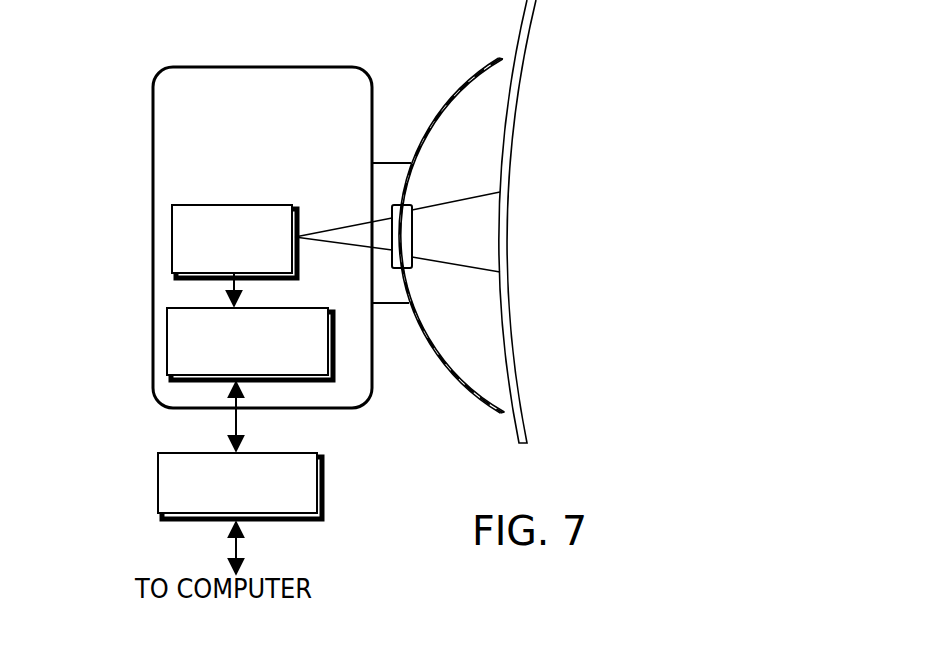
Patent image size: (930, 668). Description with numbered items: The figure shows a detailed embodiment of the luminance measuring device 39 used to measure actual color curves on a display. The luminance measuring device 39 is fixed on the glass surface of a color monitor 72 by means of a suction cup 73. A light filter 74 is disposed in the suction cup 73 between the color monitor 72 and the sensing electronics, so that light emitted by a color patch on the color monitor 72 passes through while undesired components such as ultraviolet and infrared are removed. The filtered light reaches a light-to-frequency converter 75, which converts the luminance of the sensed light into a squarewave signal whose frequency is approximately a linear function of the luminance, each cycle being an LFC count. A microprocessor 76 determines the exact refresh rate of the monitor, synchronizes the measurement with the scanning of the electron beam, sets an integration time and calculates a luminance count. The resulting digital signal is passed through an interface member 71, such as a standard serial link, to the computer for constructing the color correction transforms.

The luminance measuring device 39 is at (129, 60).
The interface member 71 is at (325, 478).
The color monitor 72 is at (527, 33).
The suction cup 73 is at (474, 60).
The light filter 74 is at (392, 210).
The light-to-frequency converter 75 is at (255, 205).
The microprocessor 76 is at (278, 308).